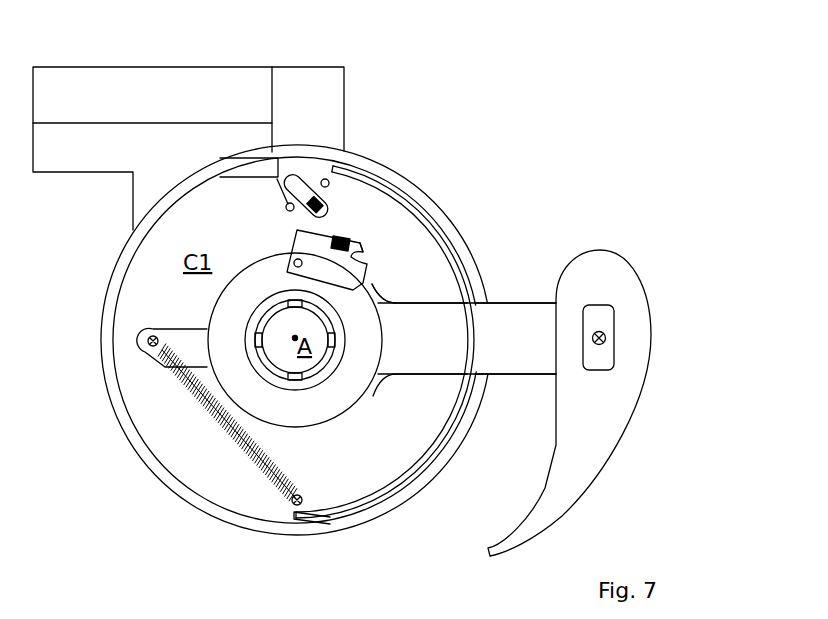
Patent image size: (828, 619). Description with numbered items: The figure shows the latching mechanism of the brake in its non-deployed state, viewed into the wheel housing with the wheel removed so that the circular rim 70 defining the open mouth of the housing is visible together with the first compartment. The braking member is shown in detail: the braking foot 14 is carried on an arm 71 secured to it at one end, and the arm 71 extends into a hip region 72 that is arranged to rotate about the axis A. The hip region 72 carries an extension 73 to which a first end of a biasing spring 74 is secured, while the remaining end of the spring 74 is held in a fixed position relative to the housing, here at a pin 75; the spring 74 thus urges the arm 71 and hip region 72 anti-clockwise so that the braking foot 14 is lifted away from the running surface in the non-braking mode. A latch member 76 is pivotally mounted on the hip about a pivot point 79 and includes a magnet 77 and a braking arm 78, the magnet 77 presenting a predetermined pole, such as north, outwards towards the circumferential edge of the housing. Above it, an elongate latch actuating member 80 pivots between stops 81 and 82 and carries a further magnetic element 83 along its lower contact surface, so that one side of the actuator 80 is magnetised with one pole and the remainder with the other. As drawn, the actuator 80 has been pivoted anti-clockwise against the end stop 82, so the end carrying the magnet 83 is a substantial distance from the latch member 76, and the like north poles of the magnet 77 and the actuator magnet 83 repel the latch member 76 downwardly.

The braking foot 14 is at (627, 394).
The circular rim 70 is at (212, 510).
The arm 71 is at (528, 312).
The hip region 72 is at (347, 401).
The extension 73 is at (188, 336).
The biasing spring 74 is at (212, 420).
The pin 75 is at (293, 518).
The latch member 76 is at (364, 240).
The magnet 77 is at (345, 238).
The braking arm 78 is at (374, 282).
The pivot point 79 is at (295, 261).
The latch actuating member 80 is at (295, 174).
The stop 81 is at (287, 204).
The stop 82 is at (325, 179).
The magnetic element 83 is at (337, 165).